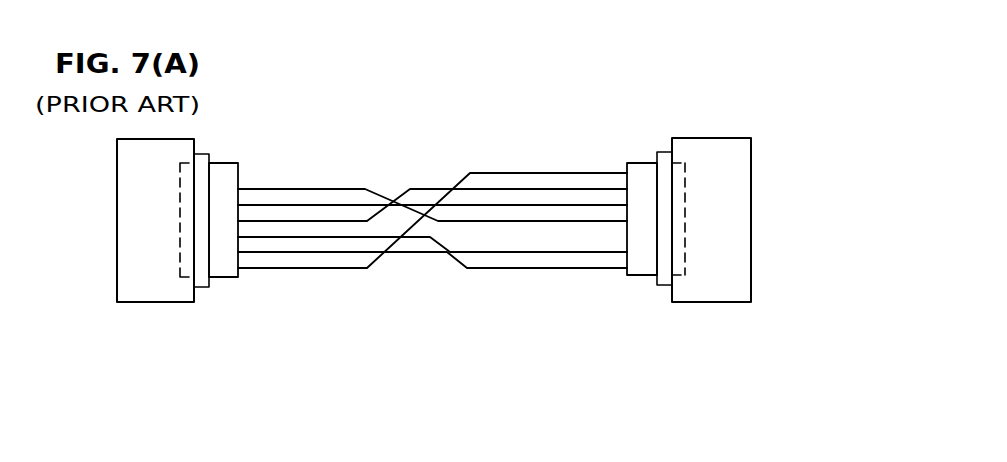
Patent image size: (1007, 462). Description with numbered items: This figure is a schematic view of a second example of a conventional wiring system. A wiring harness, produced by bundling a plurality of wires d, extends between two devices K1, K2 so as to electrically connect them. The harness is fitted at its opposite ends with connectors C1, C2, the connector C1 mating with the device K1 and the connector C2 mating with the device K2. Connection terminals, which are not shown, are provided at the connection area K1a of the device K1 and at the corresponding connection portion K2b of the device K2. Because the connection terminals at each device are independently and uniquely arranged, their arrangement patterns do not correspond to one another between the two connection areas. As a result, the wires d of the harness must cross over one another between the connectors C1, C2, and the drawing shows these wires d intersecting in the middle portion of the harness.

The device K1 is at (142, 232).
The connection area K1a is at (207, 287).
The connector C1 is at (228, 163).
The wire d is at (555, 172).
The connector C2 is at (642, 160).
The connector portion of second device K2b is at (657, 285).
The device K2 is at (725, 218).